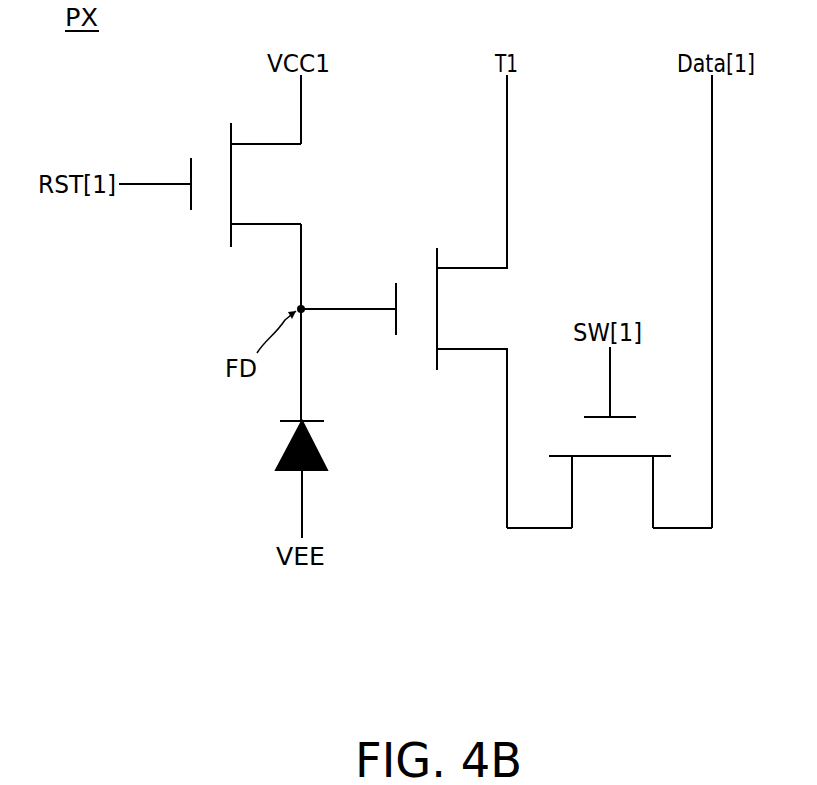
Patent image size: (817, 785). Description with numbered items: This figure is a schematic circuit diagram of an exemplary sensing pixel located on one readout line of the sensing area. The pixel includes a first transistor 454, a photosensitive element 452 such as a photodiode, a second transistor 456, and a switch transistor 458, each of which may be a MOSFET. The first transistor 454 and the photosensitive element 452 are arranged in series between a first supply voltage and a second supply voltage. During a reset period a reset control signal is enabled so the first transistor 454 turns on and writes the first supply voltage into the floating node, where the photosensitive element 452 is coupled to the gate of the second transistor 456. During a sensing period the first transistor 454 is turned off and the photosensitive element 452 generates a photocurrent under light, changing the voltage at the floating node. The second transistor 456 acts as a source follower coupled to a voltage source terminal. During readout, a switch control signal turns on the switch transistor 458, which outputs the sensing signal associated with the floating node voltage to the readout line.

The photosensitive element 452 is at (288, 440).
The first transistor 454 is at (263, 143).
The second transistor 456 is at (472, 268).
The switch transistor 458 is at (616, 502).